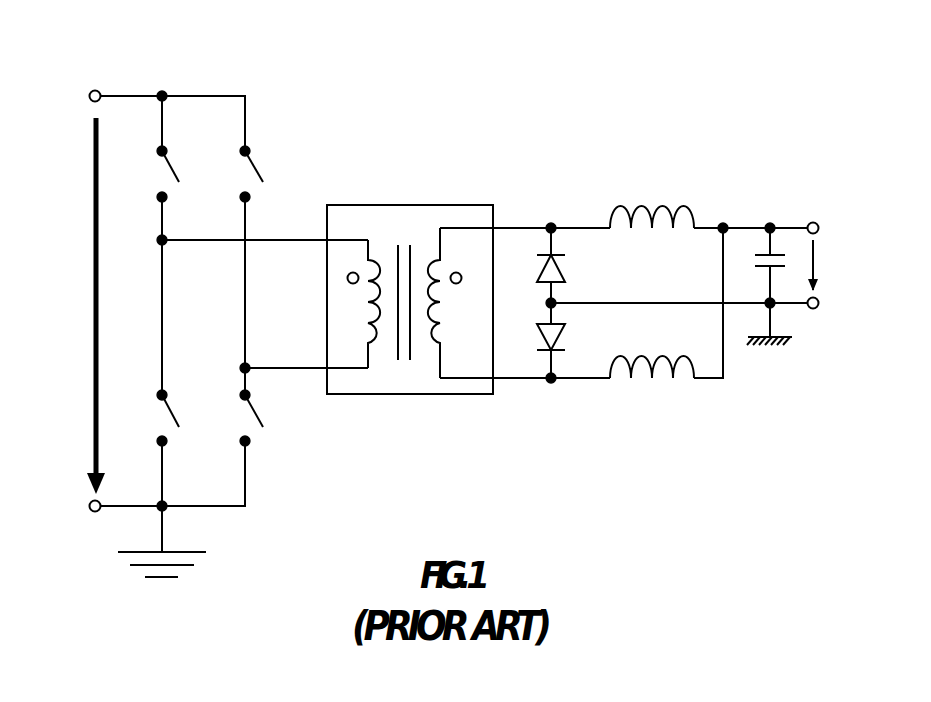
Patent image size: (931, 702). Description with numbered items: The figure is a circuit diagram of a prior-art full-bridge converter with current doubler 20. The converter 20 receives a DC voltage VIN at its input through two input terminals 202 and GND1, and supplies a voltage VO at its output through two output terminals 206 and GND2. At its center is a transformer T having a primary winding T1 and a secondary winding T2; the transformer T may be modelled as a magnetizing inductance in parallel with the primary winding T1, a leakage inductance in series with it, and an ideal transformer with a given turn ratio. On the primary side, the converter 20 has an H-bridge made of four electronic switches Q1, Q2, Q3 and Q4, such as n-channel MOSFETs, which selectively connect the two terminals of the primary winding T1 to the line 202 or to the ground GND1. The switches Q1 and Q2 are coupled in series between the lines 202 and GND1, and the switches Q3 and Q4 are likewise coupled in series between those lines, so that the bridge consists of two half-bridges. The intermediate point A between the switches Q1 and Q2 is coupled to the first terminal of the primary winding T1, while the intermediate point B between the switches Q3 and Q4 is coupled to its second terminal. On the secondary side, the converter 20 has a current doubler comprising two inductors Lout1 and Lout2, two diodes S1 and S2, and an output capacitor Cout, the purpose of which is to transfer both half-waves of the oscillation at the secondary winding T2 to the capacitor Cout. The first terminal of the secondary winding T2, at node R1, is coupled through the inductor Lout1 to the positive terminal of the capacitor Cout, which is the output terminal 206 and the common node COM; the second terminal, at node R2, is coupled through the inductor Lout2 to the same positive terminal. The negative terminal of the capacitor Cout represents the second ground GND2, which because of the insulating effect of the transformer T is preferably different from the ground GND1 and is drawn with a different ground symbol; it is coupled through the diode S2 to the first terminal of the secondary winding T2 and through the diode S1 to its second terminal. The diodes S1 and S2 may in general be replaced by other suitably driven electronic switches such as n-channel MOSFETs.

The full-bridge converter with current doubler 20 is at (545, 117).
The input terminal 202 is at (92, 87).
The output terminal 206 is at (820, 221).
The DC input voltage VIN is at (78, 306).
The first ground GND1 is at (92, 516).
The second ground GND2 is at (813, 312).
The electronic switch Q1 is at (182, 166).
The electronic switch Q2 is at (182, 405).
The electronic switch Q3 is at (243, 169).
The electronic switch Q4 is at (235, 415).
The intermediate point A is at (169, 249).
The intermediate point B is at (250, 360).
The transformer T is at (410, 292).
The primary winding T1 is at (378, 352).
The secondary winding T2 is at (428, 352).
The rectifier node R1 is at (551, 221).
The rectifier node R2 is at (551, 386).
The diode S1 is at (569, 336).
The diode S2 is at (569, 275).
The inductor Lout1 is at (677, 205).
The inductor Lout2 is at (651, 386).
The output capacitor Cout is at (759, 251).
The common node COM is at (774, 219).
The output voltage VO is at (832, 265).